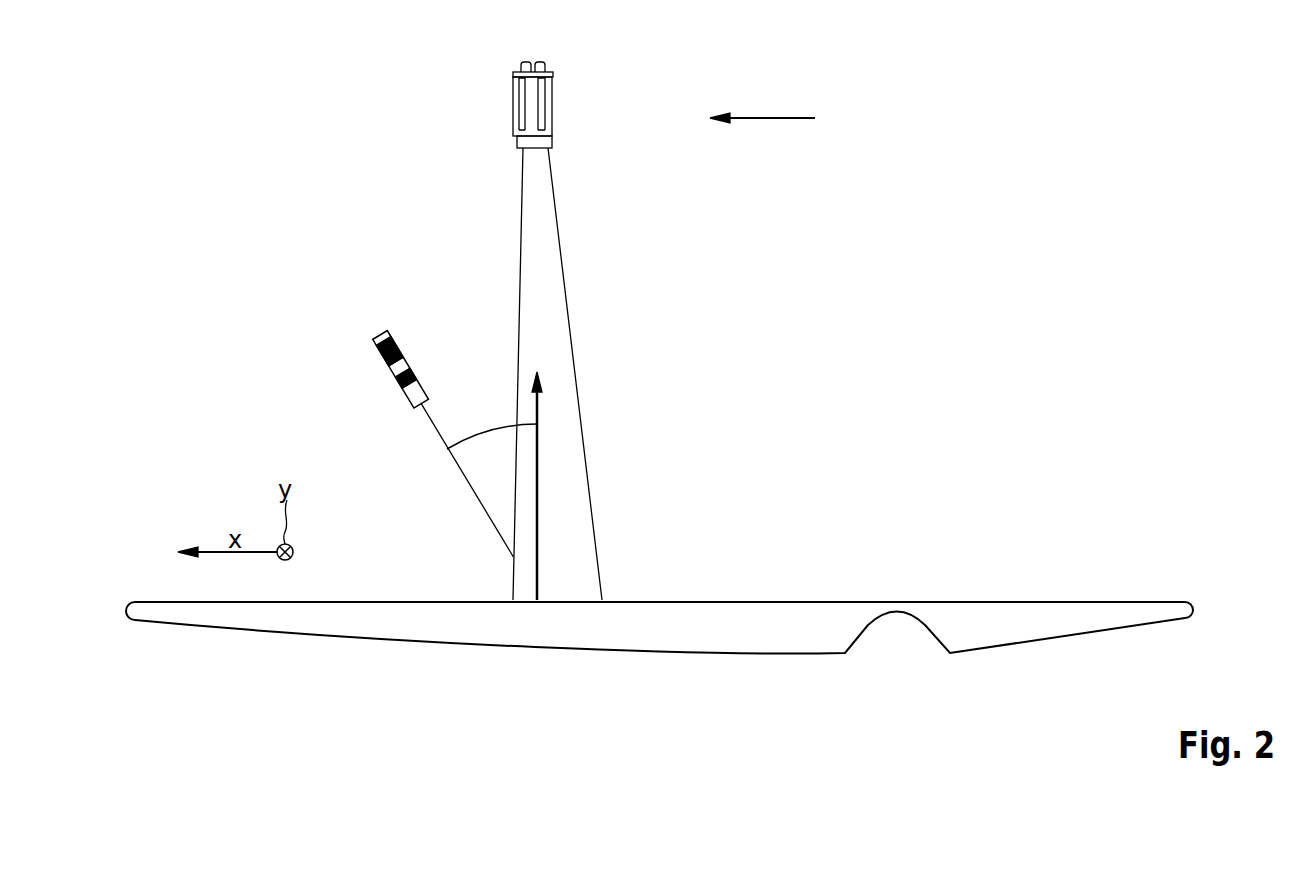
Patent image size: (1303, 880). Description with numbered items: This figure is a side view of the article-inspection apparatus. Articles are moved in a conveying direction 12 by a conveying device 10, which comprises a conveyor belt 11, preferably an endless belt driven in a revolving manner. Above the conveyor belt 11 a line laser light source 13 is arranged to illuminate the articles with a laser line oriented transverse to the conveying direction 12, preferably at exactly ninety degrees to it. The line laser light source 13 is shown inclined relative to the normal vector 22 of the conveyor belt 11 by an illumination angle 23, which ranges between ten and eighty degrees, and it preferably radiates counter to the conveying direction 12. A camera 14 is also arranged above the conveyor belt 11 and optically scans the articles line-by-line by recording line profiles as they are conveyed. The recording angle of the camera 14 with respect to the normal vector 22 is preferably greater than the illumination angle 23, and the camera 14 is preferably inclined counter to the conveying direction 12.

The conveying device 10 is at (659, 553).
The conveyor belt 11 is at (1125, 602).
The conveying direction 12 is at (767, 117).
The line laser light source 13 is at (394, 376).
The camera 14 is at (540, 108).
The normal vector 22 is at (538, 443).
The illumination angle 23 is at (490, 431).